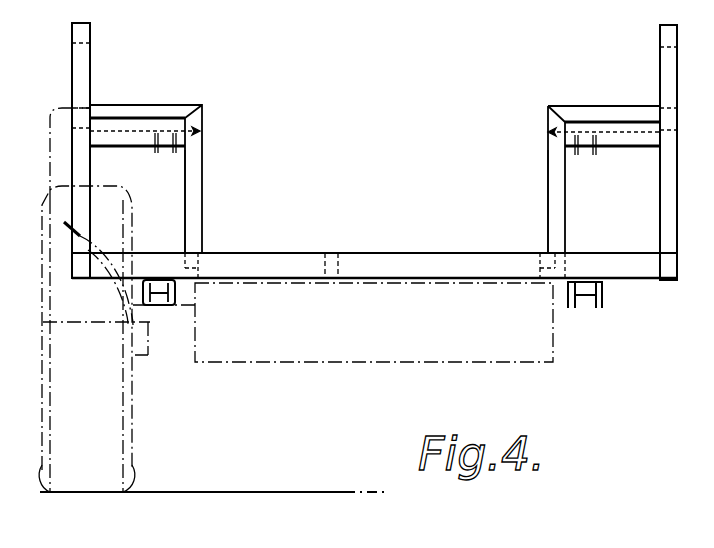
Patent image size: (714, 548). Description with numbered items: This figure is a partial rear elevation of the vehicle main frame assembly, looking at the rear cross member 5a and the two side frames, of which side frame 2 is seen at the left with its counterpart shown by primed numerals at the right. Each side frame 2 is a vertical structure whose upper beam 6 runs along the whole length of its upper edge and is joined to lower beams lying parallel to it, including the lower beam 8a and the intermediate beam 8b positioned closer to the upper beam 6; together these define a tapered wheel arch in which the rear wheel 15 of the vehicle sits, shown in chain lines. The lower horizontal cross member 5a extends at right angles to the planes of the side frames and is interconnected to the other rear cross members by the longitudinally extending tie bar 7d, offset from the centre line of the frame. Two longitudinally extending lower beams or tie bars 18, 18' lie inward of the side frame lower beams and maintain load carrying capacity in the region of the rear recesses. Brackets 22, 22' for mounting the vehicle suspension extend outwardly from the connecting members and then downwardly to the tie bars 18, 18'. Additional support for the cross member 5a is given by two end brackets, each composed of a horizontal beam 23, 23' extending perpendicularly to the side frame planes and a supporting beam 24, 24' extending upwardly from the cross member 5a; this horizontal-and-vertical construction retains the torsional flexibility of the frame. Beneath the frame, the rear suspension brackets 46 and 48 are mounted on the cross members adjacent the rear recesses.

The side frame 2 is at (92, 70).
The upper beam 6 is at (90, 33).
The lower horizontal cross member 5a is at (398, 270).
The tie bar 7d is at (335, 255).
The lower beam 8a is at (70, 317).
The intermediate beam 8b is at (70, 108).
The rear wheel 15 is at (108, 436).
The lower beam or tie bar 18 is at (225, 241).
The lower beam or tie bar 18' is at (527, 243).
The suspension mounting bracket 22 is at (137, 159).
The suspension mounting bracket 22' is at (612, 170).
The end bracket beam 23 is at (164, 163).
The end bracket beam 23' is at (604, 143).
The supporting beam 24 is at (225, 201).
The supporting beam 24' is at (512, 193).
The suspension bracket 46 is at (176, 289).
The suspension bracket 48 is at (602, 295).